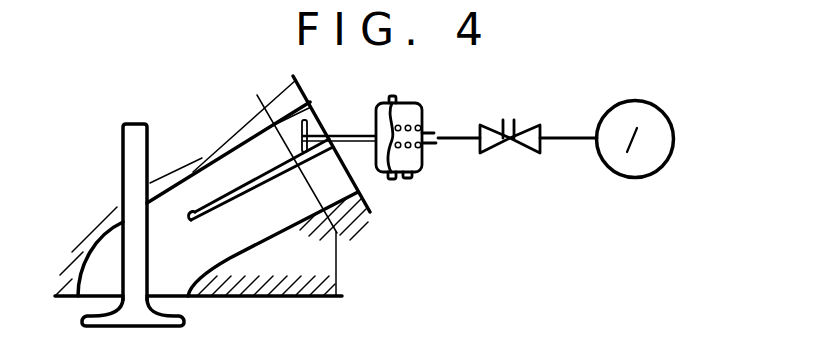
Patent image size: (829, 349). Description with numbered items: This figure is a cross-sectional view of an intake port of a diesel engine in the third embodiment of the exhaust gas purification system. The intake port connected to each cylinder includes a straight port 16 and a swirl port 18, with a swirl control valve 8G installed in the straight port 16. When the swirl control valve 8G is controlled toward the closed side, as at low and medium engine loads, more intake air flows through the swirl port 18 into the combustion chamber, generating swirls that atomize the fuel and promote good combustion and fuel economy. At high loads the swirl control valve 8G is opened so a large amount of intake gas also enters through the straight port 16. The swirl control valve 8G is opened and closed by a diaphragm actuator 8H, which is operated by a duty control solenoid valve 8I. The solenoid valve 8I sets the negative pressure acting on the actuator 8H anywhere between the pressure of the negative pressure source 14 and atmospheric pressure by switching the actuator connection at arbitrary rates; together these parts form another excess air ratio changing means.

The straight port 16 is at (223, 172).
The swirl port 18 is at (260, 213).
The swirl control valve 8G is at (316, 113).
The diaphragm actuator 8H is at (408, 176).
The duty control solenoid valve 8I is at (522, 154).
The negative pressure source 14 is at (633, 178).